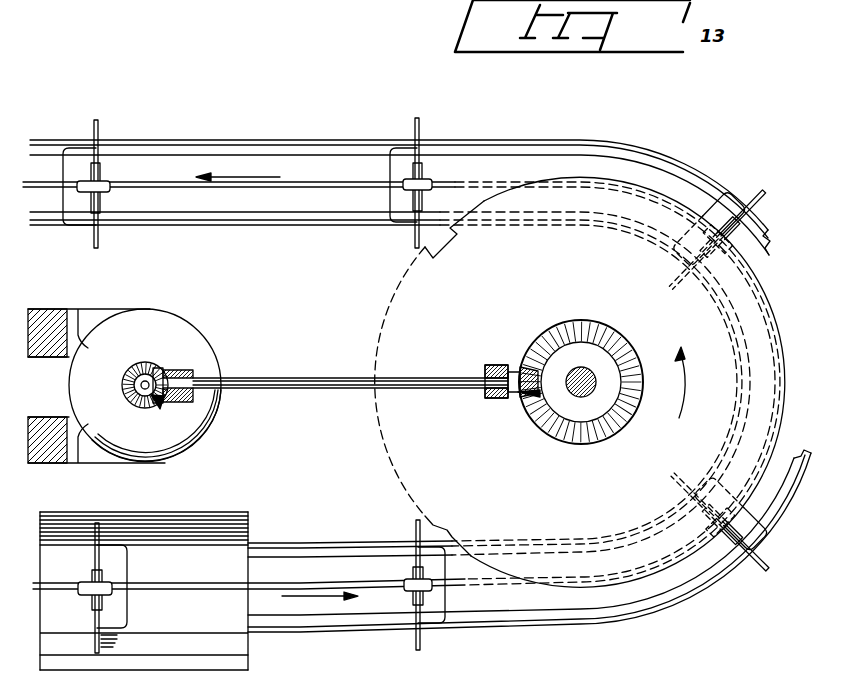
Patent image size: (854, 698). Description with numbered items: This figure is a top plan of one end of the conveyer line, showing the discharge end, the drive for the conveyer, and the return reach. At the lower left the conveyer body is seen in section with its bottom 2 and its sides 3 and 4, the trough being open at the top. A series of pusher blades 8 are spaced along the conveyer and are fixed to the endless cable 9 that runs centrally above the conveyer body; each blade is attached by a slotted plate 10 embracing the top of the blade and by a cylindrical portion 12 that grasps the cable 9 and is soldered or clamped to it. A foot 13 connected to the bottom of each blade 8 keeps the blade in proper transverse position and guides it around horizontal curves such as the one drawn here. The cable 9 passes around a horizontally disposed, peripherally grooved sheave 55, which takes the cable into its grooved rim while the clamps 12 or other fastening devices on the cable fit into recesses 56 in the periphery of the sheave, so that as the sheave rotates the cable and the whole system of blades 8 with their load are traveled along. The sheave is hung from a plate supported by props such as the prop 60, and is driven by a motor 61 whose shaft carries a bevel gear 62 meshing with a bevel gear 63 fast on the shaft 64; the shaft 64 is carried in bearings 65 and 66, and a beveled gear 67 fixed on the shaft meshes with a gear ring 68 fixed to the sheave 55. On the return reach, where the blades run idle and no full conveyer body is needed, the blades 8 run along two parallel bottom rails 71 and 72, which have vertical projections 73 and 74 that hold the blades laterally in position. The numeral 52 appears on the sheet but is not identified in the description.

The bottom 2 is at (155, 625).
The side 3 is at (200, 512).
The side 4 is at (205, 665).
The pusher blade 8 is at (100, 133).
The endless cable 9 is at (318, 188).
The slotted plate 10 is at (100, 206).
The cylindrical portion 12 is at (108, 173).
The foot 13 is at (122, 566).
The frame member 52 is at (188, 13).
The sheave 55 is at (380, 462).
The recess 56 is at (445, 519).
The prop 60 is at (62, 308).
The motor 61 is at (165, 313).
The bevel gear 62 is at (153, 370).
The bevel gear 63 is at (180, 372).
The shaft 64 is at (318, 378).
The bearing 65 is at (161, 407).
The bearing 66 is at (486, 365).
The beveled gear 67 is at (516, 368).
The gear ring 68 is at (589, 322).
The bottom rail 71 is at (617, 543).
The bottom rail 72 is at (592, 617).
The vertical projection 73 is at (565, 541).
The vertical projection 74 is at (647, 628).